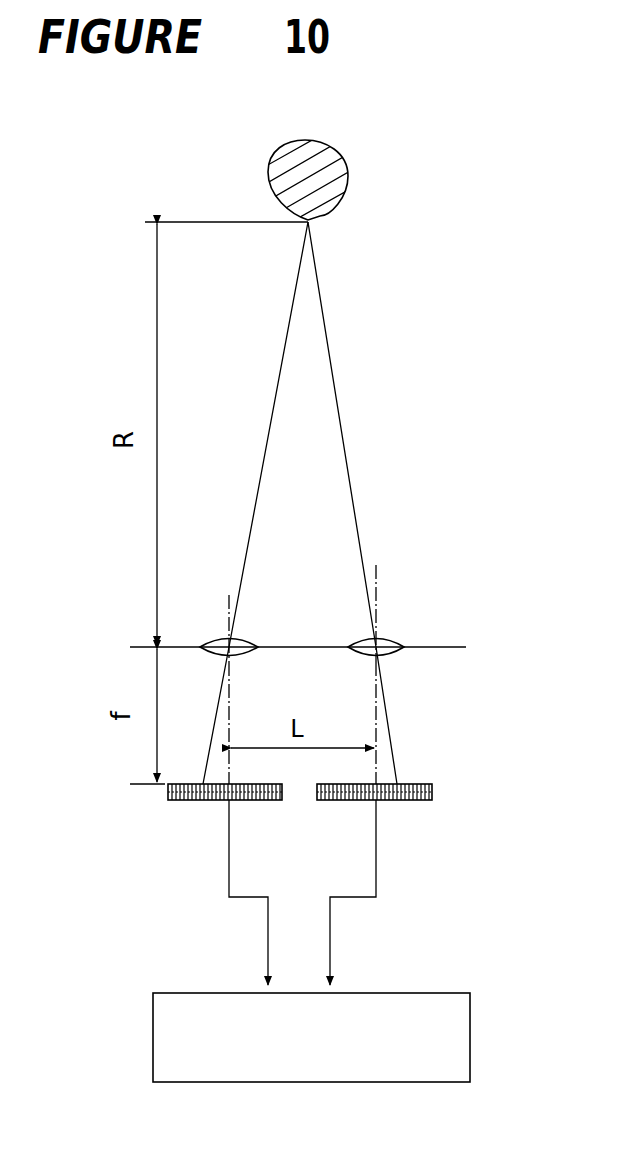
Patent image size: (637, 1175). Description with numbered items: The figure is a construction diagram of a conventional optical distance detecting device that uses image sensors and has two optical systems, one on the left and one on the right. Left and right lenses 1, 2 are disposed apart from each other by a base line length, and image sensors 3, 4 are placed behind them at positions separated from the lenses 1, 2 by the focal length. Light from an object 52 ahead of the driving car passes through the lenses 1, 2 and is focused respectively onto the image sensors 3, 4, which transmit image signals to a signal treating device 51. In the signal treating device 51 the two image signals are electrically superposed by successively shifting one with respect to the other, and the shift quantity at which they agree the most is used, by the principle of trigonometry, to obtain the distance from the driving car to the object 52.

The left lens 1 is at (240, 638).
The right lens 2 is at (386, 638).
The image sensor 3 is at (183, 801).
The image sensor 4 is at (410, 801).
The signal treating device 51 is at (432, 993).
The object 52 is at (348, 178).